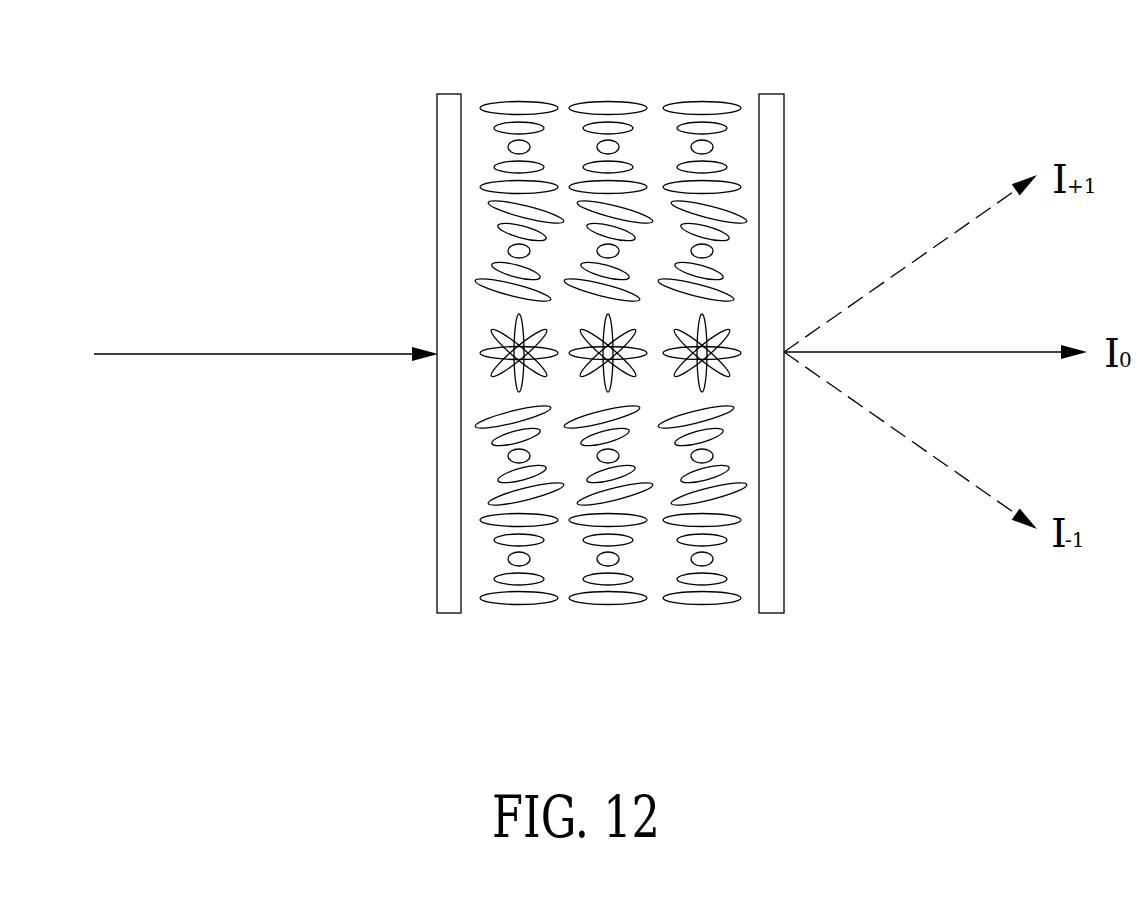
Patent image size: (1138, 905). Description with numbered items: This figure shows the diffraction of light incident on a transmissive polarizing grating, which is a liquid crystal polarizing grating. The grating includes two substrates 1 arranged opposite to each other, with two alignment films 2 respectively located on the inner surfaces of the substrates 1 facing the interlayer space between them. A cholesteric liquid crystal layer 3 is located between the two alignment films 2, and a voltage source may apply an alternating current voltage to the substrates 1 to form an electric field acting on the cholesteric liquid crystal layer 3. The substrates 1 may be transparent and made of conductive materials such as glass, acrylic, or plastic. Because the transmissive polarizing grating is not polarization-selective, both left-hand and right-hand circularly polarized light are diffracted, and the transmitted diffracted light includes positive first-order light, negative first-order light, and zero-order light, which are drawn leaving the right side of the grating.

The substrate 1 is at (437, 495).
The alignment film 2 is at (784, 515).
The cholesteric liquid crystal layer 3 is at (697, 70).